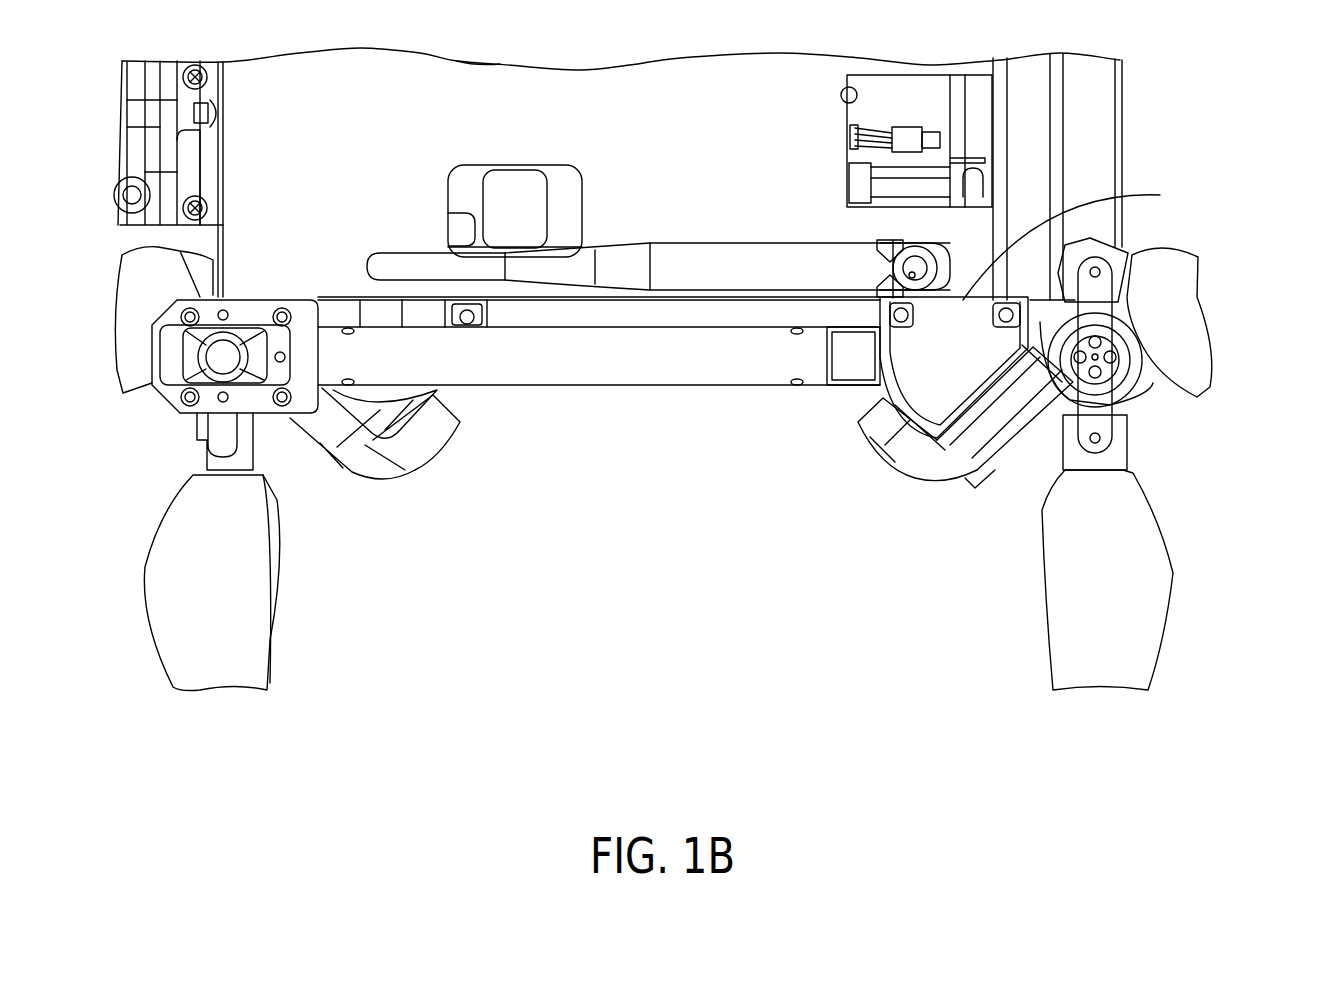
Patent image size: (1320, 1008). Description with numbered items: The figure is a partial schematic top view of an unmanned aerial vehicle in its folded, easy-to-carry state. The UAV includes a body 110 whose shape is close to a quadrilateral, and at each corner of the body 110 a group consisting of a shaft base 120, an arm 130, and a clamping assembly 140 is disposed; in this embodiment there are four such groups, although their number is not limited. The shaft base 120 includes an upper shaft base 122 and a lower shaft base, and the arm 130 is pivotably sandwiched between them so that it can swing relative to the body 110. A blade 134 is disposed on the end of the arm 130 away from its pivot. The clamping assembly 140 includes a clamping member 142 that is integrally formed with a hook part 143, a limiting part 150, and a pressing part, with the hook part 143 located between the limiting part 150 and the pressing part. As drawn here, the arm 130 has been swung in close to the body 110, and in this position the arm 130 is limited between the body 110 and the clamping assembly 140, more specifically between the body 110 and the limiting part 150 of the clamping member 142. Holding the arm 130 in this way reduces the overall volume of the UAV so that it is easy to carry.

The body 110 is at (553, 295).
The arm 130 is at (715, 355).
The blade 134 is at (253, 622).
The upper shaft base 122 is at (960, 320).
The shaft base 120 is at (1083, 432).
The clamping member 142 is at (925, 560).
The clamping assembly 140 is at (938, 477).
The hook part 143 is at (1003, 415).
The limiting part 150 is at (863, 407).